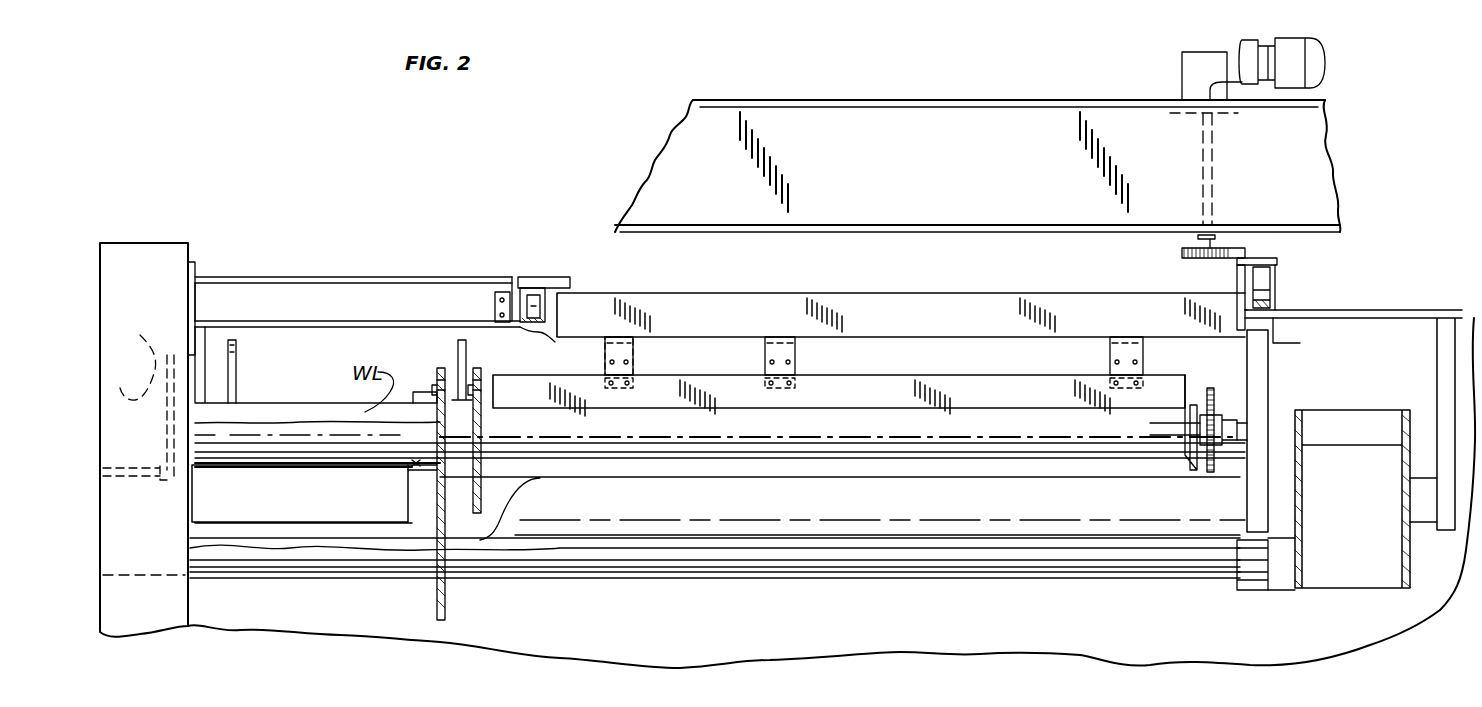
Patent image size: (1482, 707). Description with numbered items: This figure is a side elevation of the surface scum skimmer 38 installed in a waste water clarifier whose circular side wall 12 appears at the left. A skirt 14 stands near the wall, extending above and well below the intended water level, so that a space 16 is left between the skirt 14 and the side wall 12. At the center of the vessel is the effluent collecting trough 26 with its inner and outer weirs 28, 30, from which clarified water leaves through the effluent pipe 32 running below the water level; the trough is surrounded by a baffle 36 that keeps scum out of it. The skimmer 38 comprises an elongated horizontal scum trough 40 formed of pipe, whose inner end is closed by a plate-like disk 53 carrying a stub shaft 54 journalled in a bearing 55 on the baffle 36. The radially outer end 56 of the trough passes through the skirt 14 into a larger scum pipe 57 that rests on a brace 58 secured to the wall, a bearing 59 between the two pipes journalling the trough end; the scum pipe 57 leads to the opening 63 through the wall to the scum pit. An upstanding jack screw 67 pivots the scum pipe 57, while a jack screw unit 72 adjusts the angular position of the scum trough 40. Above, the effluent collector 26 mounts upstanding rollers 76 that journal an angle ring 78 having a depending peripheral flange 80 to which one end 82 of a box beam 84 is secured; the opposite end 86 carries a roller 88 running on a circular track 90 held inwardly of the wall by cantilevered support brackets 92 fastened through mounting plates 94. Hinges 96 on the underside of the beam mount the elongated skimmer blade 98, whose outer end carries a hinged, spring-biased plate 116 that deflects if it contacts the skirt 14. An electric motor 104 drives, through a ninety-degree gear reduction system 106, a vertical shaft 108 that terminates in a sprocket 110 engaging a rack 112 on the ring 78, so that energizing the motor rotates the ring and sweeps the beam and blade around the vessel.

The circular side wall 12 is at (198, 260).
The skirt 14 is at (445, 606).
The space 16 is at (304, 365).
The effluent collecting trough 26 is at (1434, 297).
The inner weir 28 is at (1398, 563).
The outer weir 30 is at (1302, 432).
The effluent pipe 32 is at (880, 580).
The baffle 36 is at (1232, 373).
The surface scum skimmer 38 is at (745, 483).
The scum trough 40 is at (985, 448).
The plate-like disk 53 is at (1200, 465).
The stub shaft 54 is at (1198, 385).
The bearing 55 is at (1240, 448).
The radially outer end 56 is at (432, 470).
The scum pipe 57 is at (348, 465).
The brace 58 is at (302, 403).
The bearing 59 is at (420, 392).
The opening 63 is at (137, 357).
The jack screw 67 is at (240, 362).
The jack screw unit 72 is at (470, 355).
The rollers 76 is at (1275, 288).
The angle ring 78 is at (1280, 262).
The peripheral flange 80 is at (1240, 290).
The end of box beam 82 is at (1228, 330).
The box beam 84 is at (1002, 310).
The opposite end of box beam 86 is at (598, 303).
The roller 88 is at (533, 290).
The circular track 90 is at (550, 342).
The cantilevered support brackets 92 is at (400, 290).
The mounting plates 94 is at (200, 268).
The hinges 96 is at (636, 365).
The skimmer blade 98 is at (905, 385).
The electric motor 104 is at (1300, 38).
The gear reduction system 106 is at (1214, 52).
The shaft 108 is at (1214, 170).
The sprocket 110 is at (1192, 258).
The rack 112 is at (1245, 243).
The plate 116 is at (510, 393).